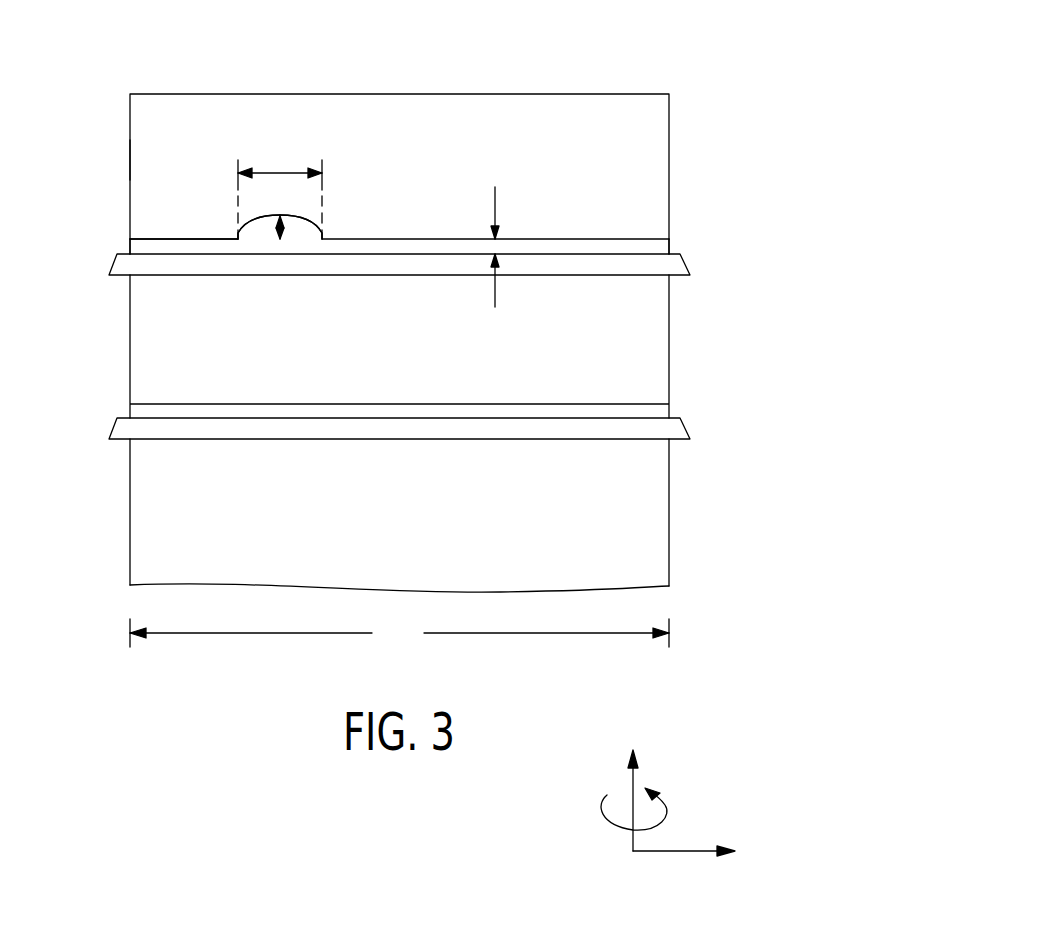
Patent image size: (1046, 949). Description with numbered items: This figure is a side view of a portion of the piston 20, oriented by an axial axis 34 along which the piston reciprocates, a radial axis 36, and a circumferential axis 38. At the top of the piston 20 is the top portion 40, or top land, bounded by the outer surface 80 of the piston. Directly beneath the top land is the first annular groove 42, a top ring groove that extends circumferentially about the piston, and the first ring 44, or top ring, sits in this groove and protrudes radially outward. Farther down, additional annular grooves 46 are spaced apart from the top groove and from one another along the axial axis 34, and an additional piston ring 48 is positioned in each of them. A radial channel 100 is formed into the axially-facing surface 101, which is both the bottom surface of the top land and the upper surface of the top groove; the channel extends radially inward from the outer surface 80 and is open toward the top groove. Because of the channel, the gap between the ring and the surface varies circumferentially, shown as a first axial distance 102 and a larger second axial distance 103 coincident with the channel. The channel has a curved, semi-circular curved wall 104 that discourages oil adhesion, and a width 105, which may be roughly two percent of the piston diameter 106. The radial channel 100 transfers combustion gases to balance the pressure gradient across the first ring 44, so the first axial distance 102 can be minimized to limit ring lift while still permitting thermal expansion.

The piston 20 is at (626, 54).
The axial axis 34 is at (628, 784).
The radial axis 36 is at (677, 852).
The circumferential axis 38 is at (663, 820).
The top portion 40 is at (657, 128).
The first annular groove 42 is at (663, 247).
The first ring 44 is at (124, 272).
The additional annular grooves 46 is at (137, 411).
The additional piston ring 48 is at (678, 432).
The outer surface 80 is at (130, 165).
The radial channel 100 is at (253, 217).
The axially-facing surface 101 is at (150, 240).
The first axial distance 102 is at (495, 207).
The second axial distance 103 is at (282, 243).
The curved wall 104 is at (307, 217).
The width 105 is at (280, 173).
The piston diameter 106 is at (399, 543).